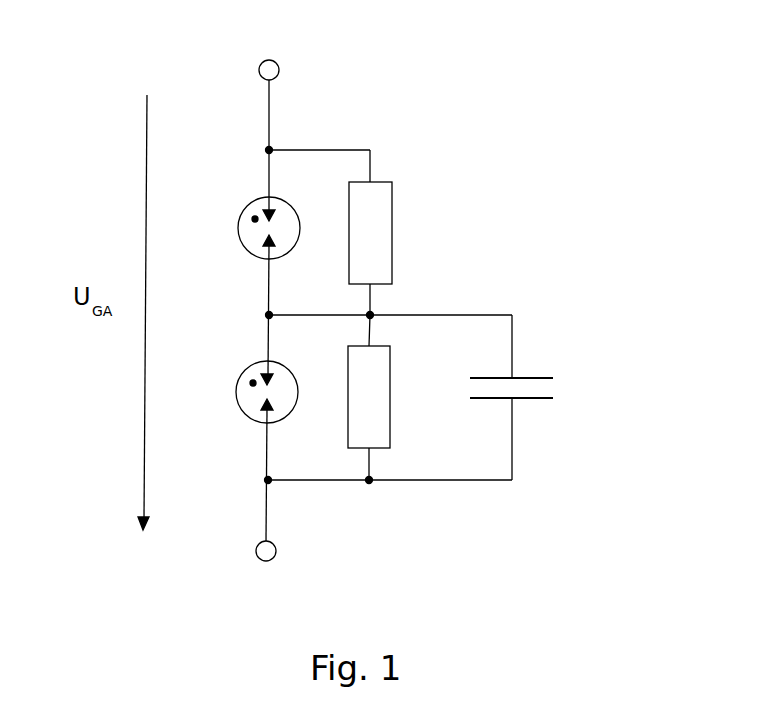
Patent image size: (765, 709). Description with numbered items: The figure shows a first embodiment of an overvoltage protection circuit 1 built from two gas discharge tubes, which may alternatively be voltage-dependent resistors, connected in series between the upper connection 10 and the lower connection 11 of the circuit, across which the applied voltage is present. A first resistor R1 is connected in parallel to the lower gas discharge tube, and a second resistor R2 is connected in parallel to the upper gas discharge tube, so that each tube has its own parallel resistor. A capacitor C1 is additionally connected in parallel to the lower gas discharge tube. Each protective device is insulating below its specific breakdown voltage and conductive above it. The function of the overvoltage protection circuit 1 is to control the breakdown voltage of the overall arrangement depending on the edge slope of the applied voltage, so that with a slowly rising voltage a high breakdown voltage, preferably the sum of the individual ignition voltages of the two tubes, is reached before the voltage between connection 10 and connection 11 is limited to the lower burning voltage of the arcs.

The overvoltage protection circuit 1 is at (519, 170).
The connection 10 is at (279, 72).
The second terminal 11 is at (273, 558).
The resistor R1 is at (373, 388).
The resistor R2 is at (381, 218).
The capacitor C1 is at (525, 360).